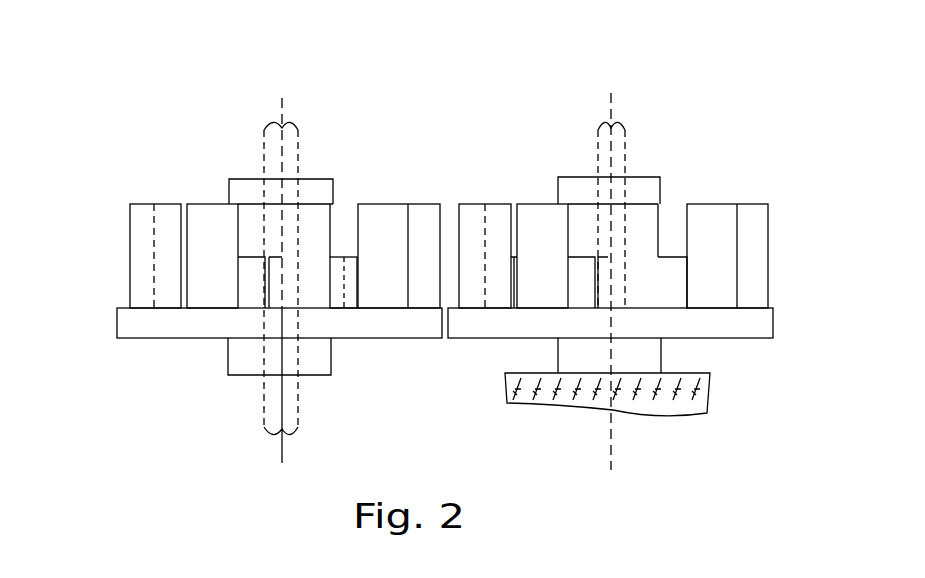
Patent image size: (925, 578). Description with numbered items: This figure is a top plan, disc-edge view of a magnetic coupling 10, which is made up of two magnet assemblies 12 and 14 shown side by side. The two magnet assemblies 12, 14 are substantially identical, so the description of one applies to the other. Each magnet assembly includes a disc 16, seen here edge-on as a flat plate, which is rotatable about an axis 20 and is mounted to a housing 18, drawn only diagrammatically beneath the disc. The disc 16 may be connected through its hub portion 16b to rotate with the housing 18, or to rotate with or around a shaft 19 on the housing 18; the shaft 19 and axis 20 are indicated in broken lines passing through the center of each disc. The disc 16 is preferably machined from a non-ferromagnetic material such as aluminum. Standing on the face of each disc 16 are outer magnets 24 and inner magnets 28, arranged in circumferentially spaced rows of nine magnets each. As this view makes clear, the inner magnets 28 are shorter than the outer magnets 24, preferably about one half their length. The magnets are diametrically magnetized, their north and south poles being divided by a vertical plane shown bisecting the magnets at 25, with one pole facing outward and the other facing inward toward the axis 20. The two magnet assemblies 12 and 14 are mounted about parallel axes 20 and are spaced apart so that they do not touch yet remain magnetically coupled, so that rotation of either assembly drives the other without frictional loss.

The magnetic coupling 10 is at (447, 369).
The magnet assembly 12 is at (114, 280).
The magnet assembly 14 is at (791, 331).
The disc 16 is at (141, 327).
The hub portion 16b is at (224, 379).
The housing 18 is at (558, 398).
The shaft 19 is at (260, 152).
The axis 20 is at (276, 94).
The outer magnets 24 is at (205, 199).
The vertical plane bisecting the magnets 25 is at (149, 253).
The inner magnets 28 is at (192, 251).